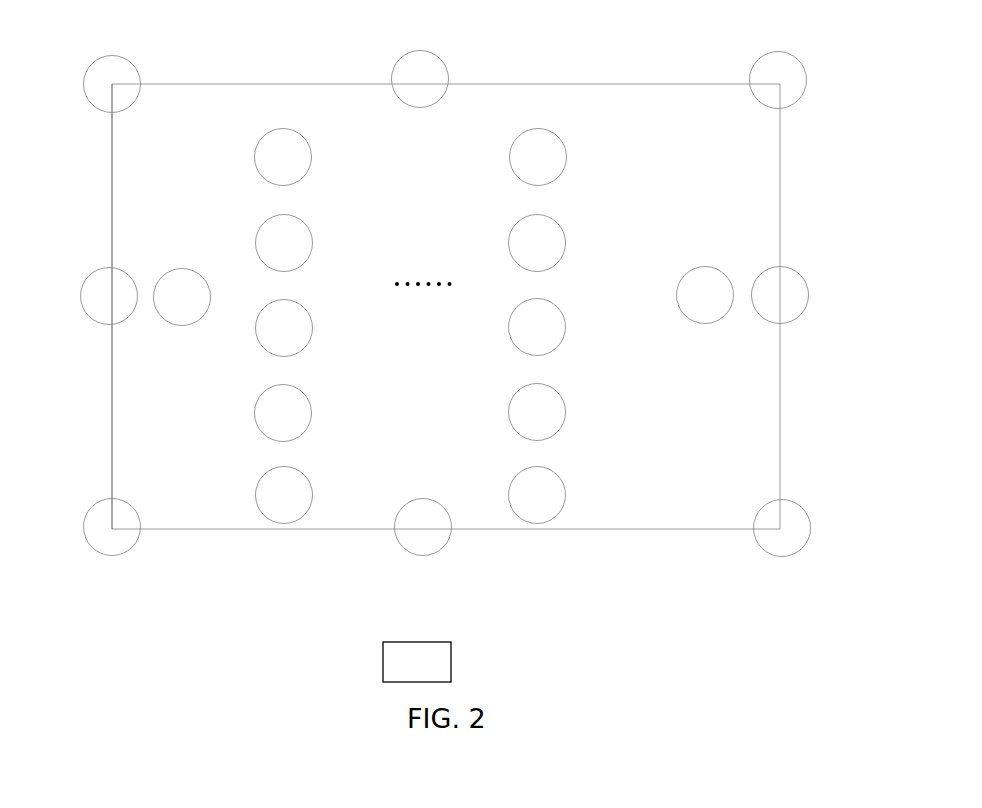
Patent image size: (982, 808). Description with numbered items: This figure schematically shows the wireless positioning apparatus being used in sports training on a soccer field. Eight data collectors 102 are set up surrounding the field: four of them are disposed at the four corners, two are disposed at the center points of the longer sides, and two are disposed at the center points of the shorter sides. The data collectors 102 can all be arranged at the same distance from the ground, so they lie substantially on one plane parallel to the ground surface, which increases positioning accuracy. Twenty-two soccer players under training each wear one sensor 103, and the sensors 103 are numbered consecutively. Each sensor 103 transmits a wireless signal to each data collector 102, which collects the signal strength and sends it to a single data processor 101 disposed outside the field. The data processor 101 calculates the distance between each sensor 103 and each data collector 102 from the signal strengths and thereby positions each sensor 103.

The data processor 101 is at (413, 642).
The data collector 102 is at (108, 56).
The sensor 103 is at (183, 269).